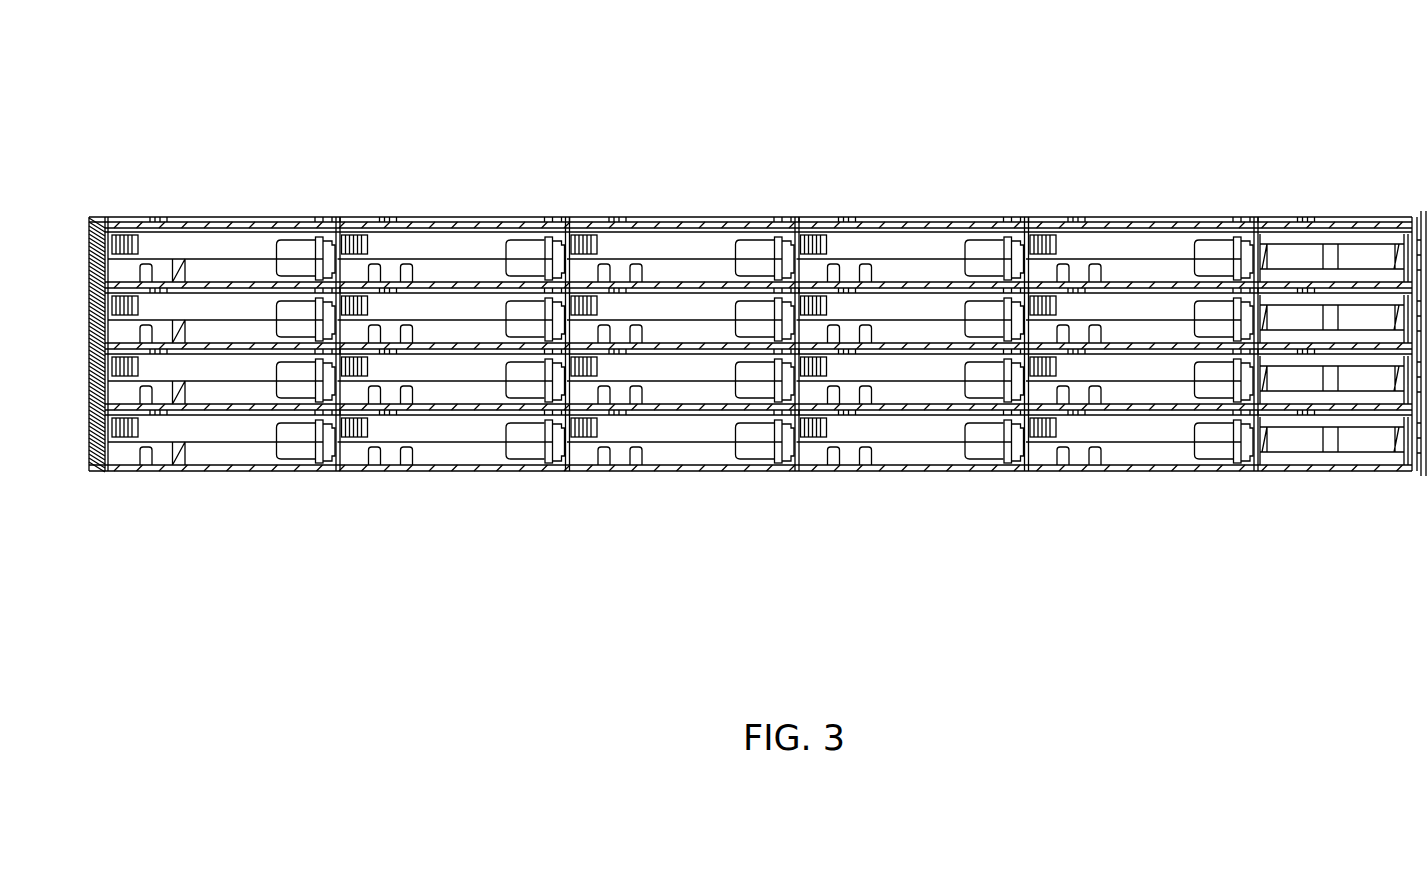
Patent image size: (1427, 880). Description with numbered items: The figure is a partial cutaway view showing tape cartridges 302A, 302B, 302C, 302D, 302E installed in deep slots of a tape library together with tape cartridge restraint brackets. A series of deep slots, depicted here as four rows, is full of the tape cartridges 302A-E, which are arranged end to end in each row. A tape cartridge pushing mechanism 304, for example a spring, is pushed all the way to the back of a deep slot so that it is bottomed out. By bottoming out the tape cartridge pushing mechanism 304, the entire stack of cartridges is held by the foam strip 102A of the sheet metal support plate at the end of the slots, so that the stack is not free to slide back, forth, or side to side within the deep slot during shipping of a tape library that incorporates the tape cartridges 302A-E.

The tape cartridge pushing mechanism 304 is at (1232, 95).
The foam strip 102A is at (99, 471).
The tape cartridge 302A is at (232, 246).
The tape cartridge 302B is at (462, 246).
The tape cartridge 302C is at (691, 246).
The tape cartridge 302D is at (920, 246).
The tape cartridge 302E is at (1150, 246).